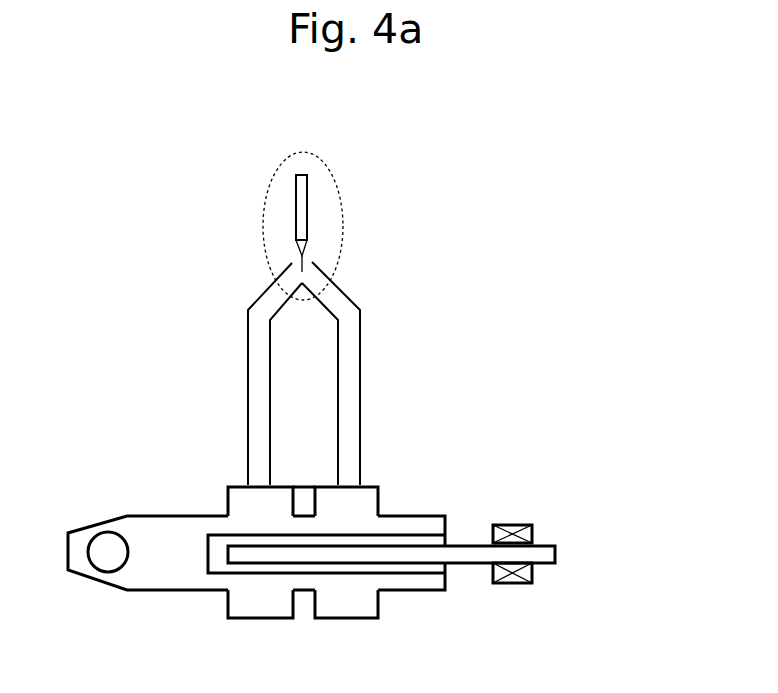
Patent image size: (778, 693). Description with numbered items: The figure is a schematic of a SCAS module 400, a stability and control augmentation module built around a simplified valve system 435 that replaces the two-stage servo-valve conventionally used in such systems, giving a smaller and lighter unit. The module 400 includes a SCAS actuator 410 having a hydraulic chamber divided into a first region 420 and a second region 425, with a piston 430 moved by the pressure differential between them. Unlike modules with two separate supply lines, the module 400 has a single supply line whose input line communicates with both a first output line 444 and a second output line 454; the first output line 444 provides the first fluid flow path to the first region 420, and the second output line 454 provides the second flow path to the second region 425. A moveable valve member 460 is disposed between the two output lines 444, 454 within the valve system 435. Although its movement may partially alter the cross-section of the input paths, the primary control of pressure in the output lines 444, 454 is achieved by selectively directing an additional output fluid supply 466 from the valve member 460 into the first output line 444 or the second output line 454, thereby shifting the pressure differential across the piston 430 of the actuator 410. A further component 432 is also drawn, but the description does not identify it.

The SCAS module 400 is at (536, 130).
The SCAS actuator 410 is at (543, 473).
The first region of the hydraulic chamber 420 is at (250, 503).
The second region of the hydraulic chamber 425 is at (357, 500).
The piston 430 is at (478, 553).
The coil/winding 432 is at (532, 583).
The simplified valve system 435 is at (270, 172).
The first output line 444 is at (258, 418).
The second output line 454 is at (352, 388).
The moveable valve member 460 is at (305, 195).
The output fluid supply 466 is at (330, 268).